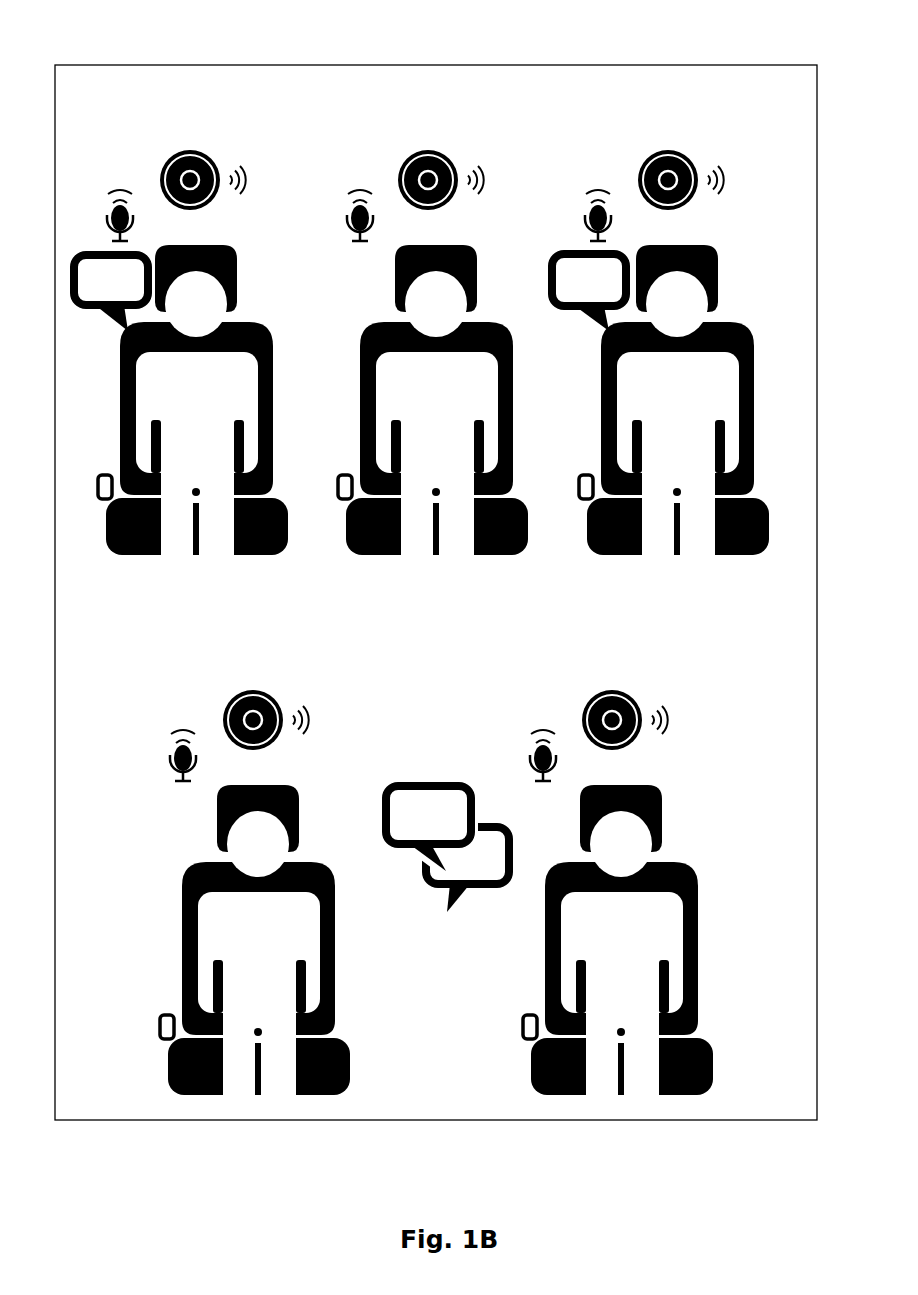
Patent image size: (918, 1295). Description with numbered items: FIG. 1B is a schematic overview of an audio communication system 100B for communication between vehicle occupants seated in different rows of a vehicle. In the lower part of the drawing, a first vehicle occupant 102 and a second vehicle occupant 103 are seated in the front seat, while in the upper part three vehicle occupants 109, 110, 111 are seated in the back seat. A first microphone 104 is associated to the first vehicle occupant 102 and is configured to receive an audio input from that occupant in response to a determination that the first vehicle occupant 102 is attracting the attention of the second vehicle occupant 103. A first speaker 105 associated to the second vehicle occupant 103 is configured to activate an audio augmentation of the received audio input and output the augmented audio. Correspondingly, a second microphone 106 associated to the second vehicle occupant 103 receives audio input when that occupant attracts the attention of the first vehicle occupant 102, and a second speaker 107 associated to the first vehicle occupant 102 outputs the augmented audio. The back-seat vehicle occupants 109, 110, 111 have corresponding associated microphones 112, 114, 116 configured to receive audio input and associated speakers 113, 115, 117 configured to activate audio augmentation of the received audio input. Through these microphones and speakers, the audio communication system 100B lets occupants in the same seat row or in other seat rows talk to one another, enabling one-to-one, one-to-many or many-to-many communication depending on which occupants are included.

The audio communication system 100B is at (569, 52).
The first vehicle occupant 102 is at (308, 862).
The second vehicle occupant 103 is at (660, 862).
The first microphone 104 is at (184, 728).
The first speaker 105 is at (616, 690).
The second microphone 106 is at (544, 728).
The second speaker 107 is at (255, 690).
The vehicle occupant 109 is at (244, 322).
The vehicle occupant 110 is at (484, 322).
The vehicle occupant 111 is at (724, 322).
The microphone 112 is at (121, 188).
The speaker 113 is at (673, 150).
The microphone 114 is at (599, 188).
The speaker 115 is at (193, 150).
The microphone 116 is at (360, 188).
The speaker 117 is at (434, 150).